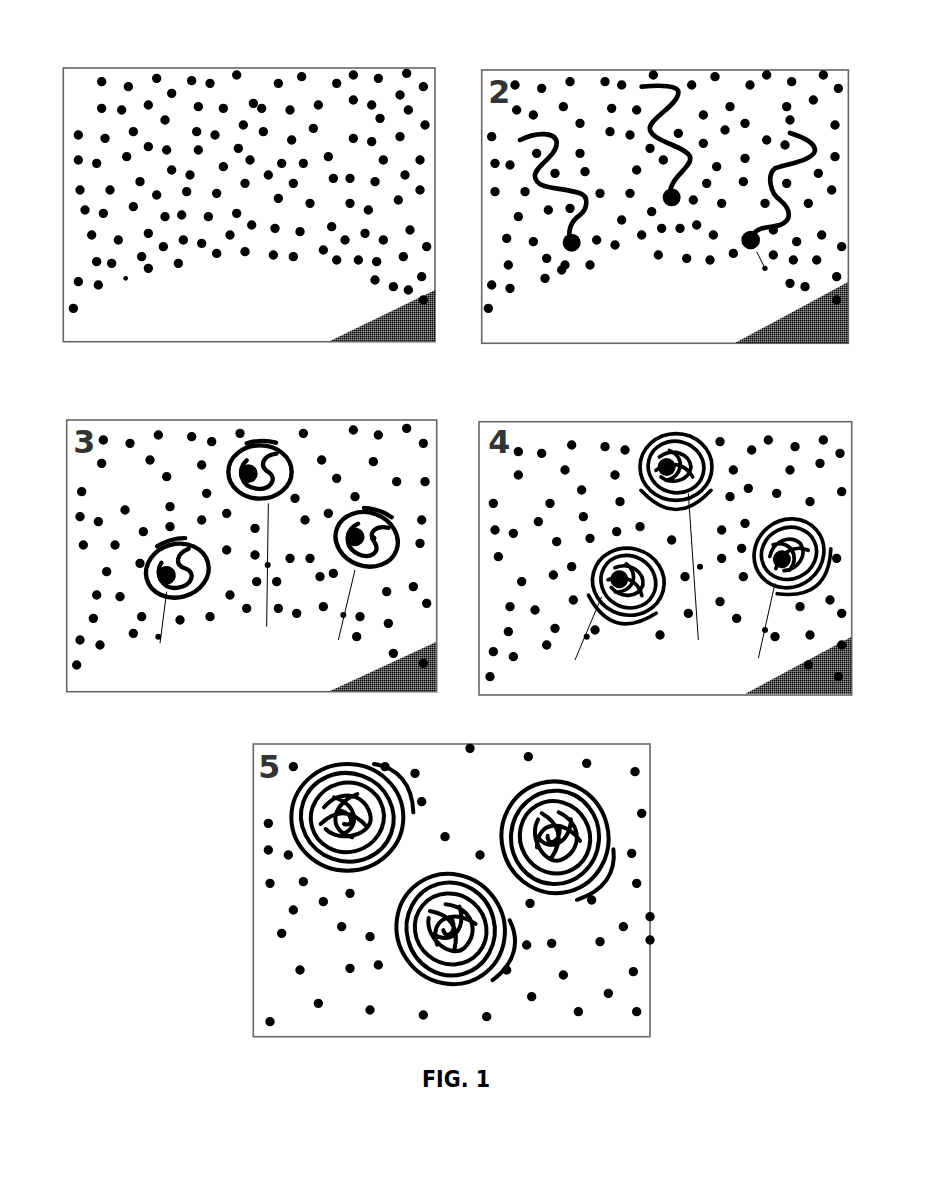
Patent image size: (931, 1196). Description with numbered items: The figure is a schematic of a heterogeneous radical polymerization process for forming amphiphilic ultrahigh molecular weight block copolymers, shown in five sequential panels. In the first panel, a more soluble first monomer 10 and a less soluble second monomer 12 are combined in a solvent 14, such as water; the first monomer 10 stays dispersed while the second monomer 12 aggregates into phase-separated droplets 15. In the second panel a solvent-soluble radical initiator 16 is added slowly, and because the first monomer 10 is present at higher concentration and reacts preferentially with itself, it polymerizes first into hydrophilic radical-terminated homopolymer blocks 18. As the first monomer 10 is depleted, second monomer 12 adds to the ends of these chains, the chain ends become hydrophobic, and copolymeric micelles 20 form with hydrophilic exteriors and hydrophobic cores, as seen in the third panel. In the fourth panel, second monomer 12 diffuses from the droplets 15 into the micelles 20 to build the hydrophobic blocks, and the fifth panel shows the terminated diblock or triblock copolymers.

The first monomer 10 is at (190, 80).
The second monomer 12 is at (195, 655).
The solvent 14 is at (580, 55).
The droplets 15 is at (260, 312).
The initiator 16 is at (295, 575).
The homopolymer blocks 18 is at (545, 75).
The copolymeric micelles 20 is at (536, 704).